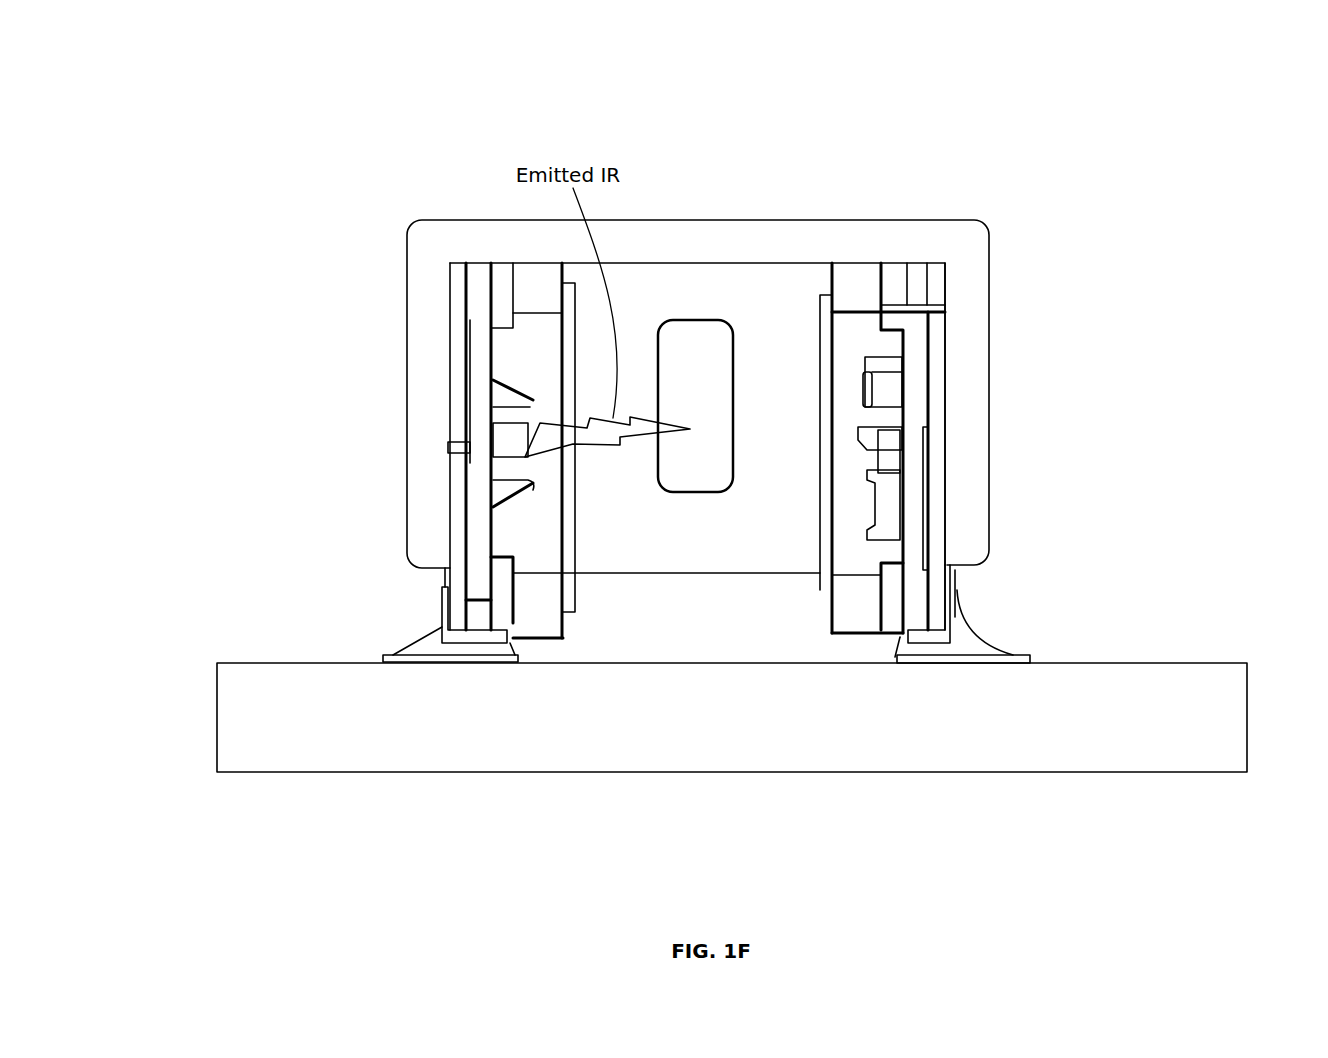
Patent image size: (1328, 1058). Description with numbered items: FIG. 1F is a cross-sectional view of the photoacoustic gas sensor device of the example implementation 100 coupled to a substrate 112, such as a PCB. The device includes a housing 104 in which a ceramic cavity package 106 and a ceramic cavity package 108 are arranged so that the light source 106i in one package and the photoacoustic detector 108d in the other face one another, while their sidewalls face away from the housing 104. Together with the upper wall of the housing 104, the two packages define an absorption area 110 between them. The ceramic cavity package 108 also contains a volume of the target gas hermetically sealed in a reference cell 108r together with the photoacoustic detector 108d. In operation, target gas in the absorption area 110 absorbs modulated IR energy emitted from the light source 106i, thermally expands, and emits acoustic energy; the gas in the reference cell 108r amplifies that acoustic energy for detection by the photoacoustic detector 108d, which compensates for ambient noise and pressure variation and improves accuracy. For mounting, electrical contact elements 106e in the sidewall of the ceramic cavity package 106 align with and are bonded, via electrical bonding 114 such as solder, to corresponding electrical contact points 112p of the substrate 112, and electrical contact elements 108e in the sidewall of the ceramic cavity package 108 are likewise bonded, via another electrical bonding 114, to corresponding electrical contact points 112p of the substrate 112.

The example implementation 100 is at (178, 62).
The housing 104 is at (970, 248).
The ceramic cavity package 106 is at (492, 240).
The light source 106i is at (517, 413).
The electrical contact element 106e is at (480, 638).
The ceramic cavity package 108 is at (958, 500).
The reference cell 108r is at (857, 325).
The photoacoustic detector 108d is at (887, 387).
The electrical contact element 108e is at (933, 640).
The absorption area 110 is at (583, 512).
The substrate 112 is at (568, 745).
The electrical contact point 112p is at (1073, 608).
The electrical bonding 114 is at (1080, 552).